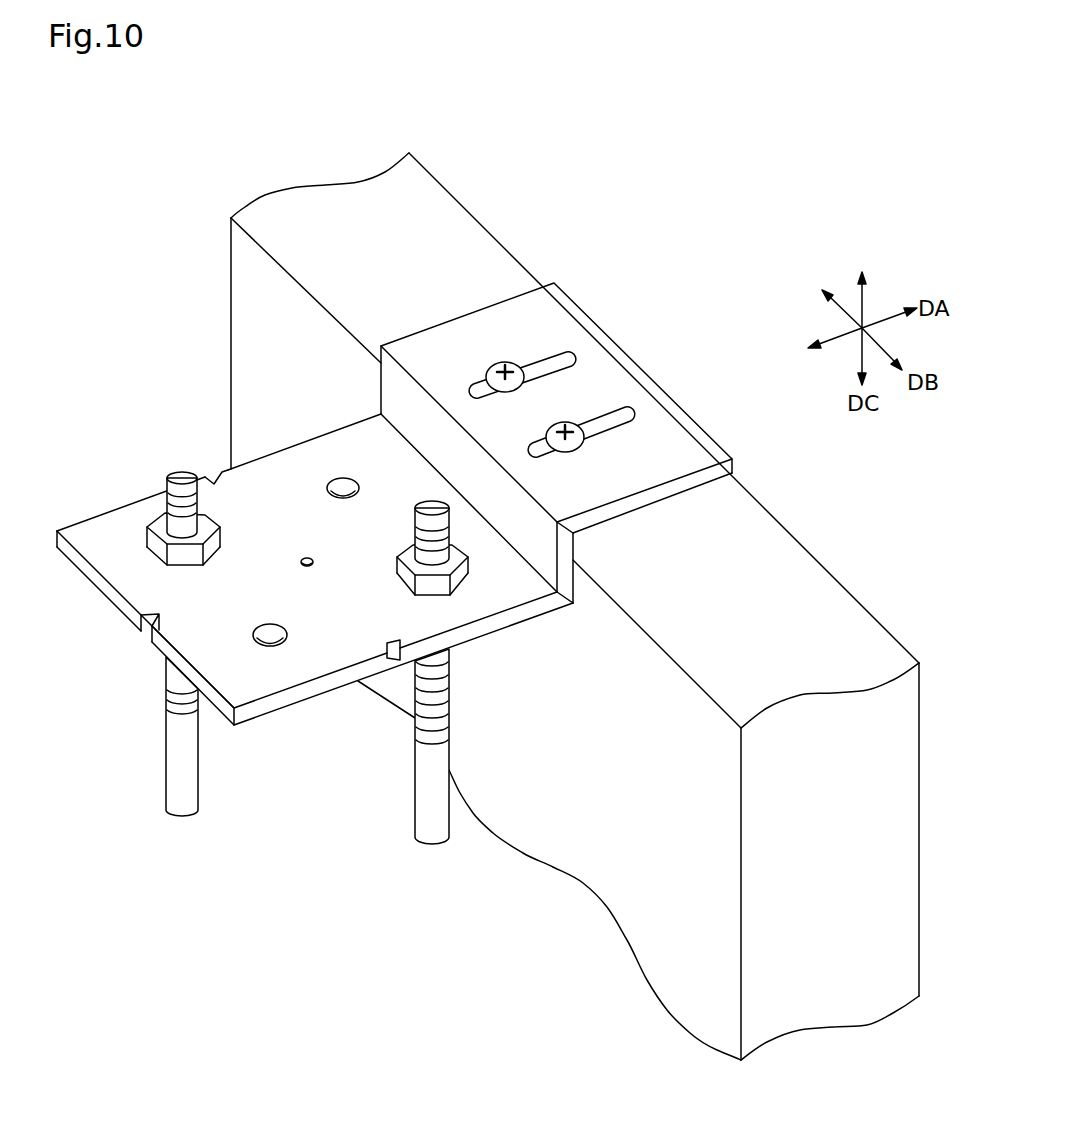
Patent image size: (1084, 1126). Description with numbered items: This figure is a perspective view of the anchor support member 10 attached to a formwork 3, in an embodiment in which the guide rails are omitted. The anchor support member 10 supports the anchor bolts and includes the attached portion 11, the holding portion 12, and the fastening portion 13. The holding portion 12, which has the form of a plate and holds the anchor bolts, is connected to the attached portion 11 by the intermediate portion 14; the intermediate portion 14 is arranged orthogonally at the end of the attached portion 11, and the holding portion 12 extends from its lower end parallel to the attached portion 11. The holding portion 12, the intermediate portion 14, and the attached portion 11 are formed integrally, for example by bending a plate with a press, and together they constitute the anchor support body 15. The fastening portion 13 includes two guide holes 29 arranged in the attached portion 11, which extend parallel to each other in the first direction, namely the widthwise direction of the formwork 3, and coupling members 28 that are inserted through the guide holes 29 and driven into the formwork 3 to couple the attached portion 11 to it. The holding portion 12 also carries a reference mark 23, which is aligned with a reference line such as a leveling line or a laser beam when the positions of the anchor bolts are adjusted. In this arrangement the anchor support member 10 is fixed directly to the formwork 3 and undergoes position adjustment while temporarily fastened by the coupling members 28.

The formwork 3 is at (231, 262).
The anchor support member 10 is at (690, 332).
The attached portion 11 is at (573, 394).
The holding portion 12 is at (315, 569).
The fastening portion 13 is at (540, 356).
The intermediate portion 14 is at (390, 388).
The anchor support body 15 is at (725, 431).
The reference mark 23 is at (305, 558).
The coupling members 28 is at (527, 374).
The guide holes 29 is at (469, 386).